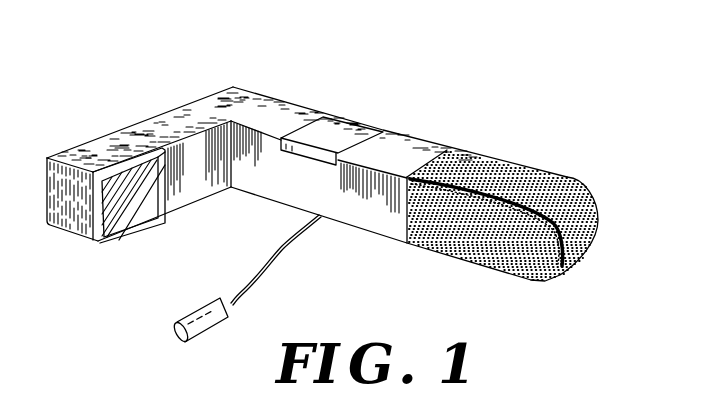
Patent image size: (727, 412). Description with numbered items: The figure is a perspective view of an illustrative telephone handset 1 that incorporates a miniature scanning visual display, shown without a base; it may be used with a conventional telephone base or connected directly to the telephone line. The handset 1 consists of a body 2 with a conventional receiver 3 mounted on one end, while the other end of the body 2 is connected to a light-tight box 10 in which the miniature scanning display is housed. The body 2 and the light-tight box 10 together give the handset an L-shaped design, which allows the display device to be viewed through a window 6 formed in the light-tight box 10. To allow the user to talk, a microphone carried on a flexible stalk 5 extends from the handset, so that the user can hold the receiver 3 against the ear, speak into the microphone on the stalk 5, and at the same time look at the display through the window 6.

The telephone handset 1 is at (344, 78).
The body 2 is at (361, 128).
The receiver 3 is at (507, 168).
The flexible stalk 5 is at (281, 252).
The window 6 is at (127, 206).
The light-tight box 10 is at (110, 142).